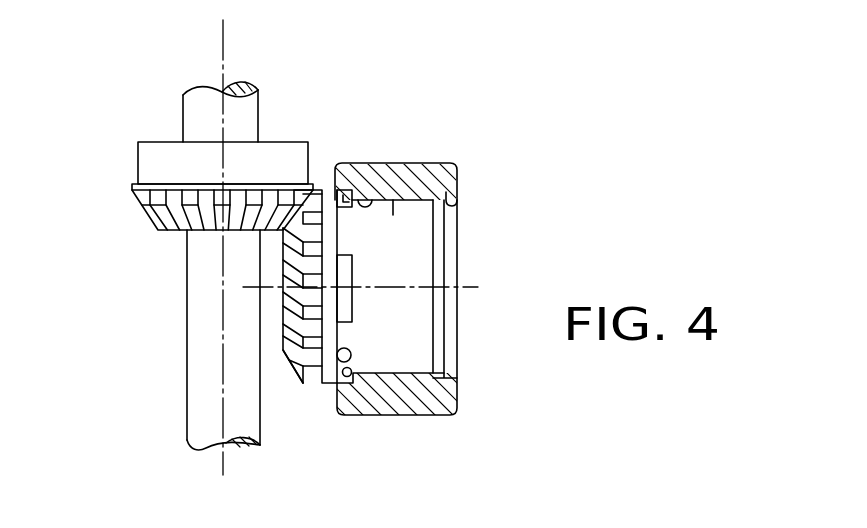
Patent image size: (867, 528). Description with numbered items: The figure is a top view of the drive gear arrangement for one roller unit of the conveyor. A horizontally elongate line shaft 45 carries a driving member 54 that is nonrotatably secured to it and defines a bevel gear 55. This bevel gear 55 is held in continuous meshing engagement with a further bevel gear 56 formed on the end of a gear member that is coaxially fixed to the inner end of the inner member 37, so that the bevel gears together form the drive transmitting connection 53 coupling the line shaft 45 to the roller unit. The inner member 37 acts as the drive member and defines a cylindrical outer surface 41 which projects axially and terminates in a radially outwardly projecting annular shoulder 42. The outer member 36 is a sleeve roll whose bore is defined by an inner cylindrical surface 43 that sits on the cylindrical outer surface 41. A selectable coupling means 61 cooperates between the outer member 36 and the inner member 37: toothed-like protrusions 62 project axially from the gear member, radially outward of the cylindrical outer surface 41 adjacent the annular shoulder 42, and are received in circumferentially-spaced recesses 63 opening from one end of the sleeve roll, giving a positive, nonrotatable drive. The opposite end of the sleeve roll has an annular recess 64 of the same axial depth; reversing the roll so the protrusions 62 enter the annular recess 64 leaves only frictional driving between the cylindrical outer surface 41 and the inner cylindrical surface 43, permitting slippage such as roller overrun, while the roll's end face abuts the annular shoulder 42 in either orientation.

The outer member 36 is at (433, 163).
The inner member 37 is at (394, 212).
The cylindrical outer surface 41 is at (360, 326).
The annular shoulder 42 is at (305, 390).
The inner cylindrical surface 43 is at (361, 197).
The line shaft 45 is at (198, 353).
The drive transmitting connection 53 is at (321, 101).
The driving member 54 is at (152, 171).
The bevel gear 55 is at (162, 225).
The further bevel gear 56 is at (298, 355).
The selectable coupling means 61 is at (335, 394).
The protrusions 62 is at (348, 196).
The recesses 63 is at (355, 356).
The annular recess 64 is at (459, 211).